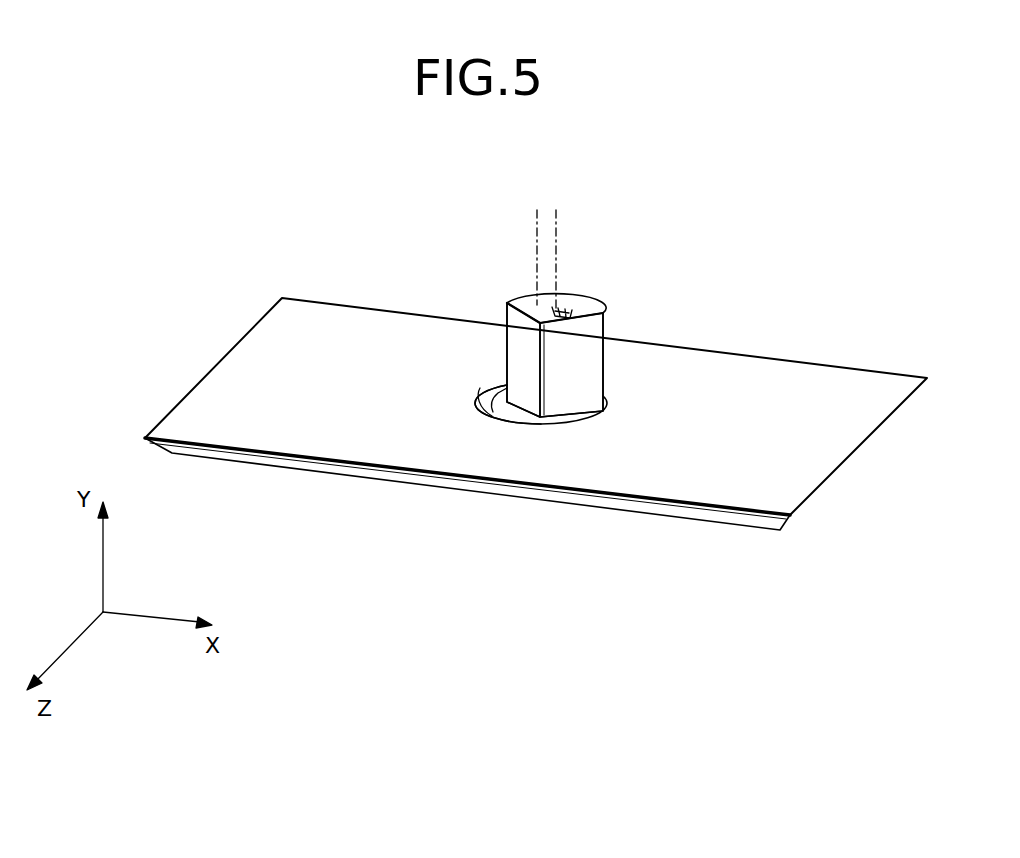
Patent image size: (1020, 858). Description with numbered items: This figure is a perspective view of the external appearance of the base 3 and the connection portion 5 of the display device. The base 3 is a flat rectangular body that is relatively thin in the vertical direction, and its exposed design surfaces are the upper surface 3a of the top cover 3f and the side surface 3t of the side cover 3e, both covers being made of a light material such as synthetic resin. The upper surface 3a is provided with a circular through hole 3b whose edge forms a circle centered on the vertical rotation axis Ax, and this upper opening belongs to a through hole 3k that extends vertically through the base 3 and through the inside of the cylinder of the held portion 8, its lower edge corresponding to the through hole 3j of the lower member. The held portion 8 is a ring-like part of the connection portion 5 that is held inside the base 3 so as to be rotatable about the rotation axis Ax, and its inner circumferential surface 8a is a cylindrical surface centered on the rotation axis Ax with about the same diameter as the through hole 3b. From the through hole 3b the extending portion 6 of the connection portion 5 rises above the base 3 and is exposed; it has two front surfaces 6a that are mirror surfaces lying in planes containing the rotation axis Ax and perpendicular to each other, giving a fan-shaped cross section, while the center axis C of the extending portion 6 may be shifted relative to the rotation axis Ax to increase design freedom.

The base 3 is at (536, 421).
The upper surface 3a is at (536, 389).
The top cover 3f is at (752, 385).
The side cover 3e is at (742, 520).
The side surface 3t is at (630, 505).
The through hole 3k is at (488, 373).
The through hole 3b is at (480, 415).
The through hole 3j is at (490, 408).
The inner circumferential surface 8a is at (544, 485).
The held portion 8 is at (498, 393).
The extending portion 6 is at (595, 328).
The connection portion 5 is at (595, 328).
The front surfaces 6a is at (520, 342).
The rotation axis Ax is at (537, 222).
The center axis C is at (558, 222).